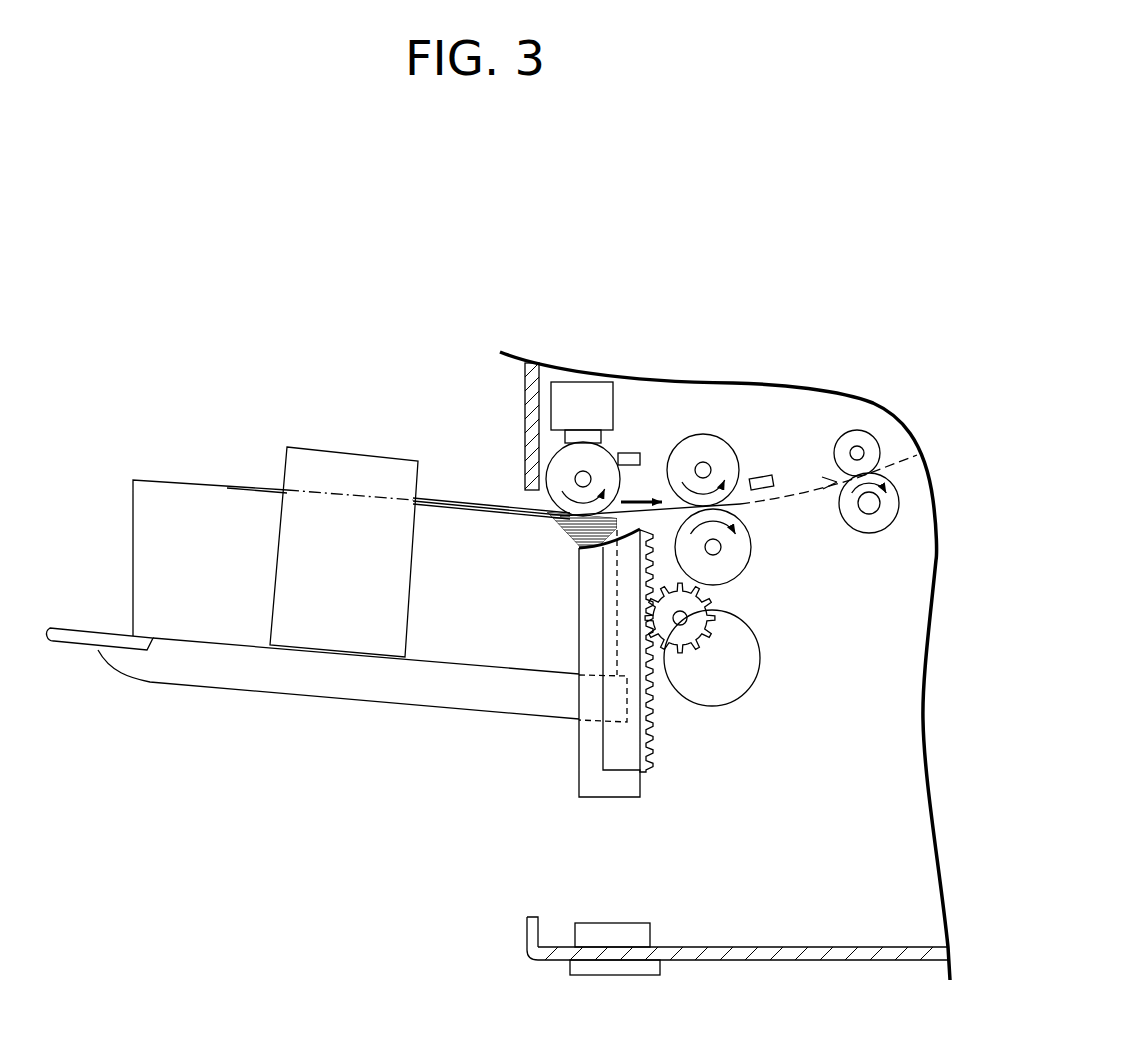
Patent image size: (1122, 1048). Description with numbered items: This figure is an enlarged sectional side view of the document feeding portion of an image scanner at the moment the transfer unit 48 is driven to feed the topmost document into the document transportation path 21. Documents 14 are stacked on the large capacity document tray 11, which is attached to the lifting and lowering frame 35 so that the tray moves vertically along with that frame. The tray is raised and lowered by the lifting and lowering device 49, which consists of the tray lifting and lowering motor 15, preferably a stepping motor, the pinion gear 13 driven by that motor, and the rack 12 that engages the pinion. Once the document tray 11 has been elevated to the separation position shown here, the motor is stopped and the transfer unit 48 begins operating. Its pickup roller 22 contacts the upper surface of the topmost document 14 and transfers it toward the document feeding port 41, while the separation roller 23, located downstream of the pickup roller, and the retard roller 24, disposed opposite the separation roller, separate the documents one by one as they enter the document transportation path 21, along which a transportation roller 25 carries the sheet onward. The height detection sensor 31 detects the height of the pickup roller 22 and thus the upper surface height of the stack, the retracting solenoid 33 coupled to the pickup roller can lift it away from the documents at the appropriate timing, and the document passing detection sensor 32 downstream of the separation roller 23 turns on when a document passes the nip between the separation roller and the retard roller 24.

The document tray 11 is at (167, 722).
The rack 12 is at (643, 755).
The pinion gear 13 is at (702, 627).
The documents 14 is at (253, 487).
The tray lifting and lowering motor 15 is at (727, 685).
The document transportation path 21 is at (905, 445).
The pickup roller 22 is at (562, 468).
The separation roller 23 is at (707, 440).
The retard roller 24 is at (735, 551).
The transportation roller 25 is at (883, 522).
The height detection sensor 31 is at (627, 450).
The document passing detection sensor 32 is at (760, 470).
The retracting solenoid 33 is at (575, 398).
The lifting and lowering frame 35 is at (590, 780).
The document feeding port 41 is at (495, 496).
The transfer unit 48 is at (544, 546).
The lifting and lowering device 49 is at (810, 341).